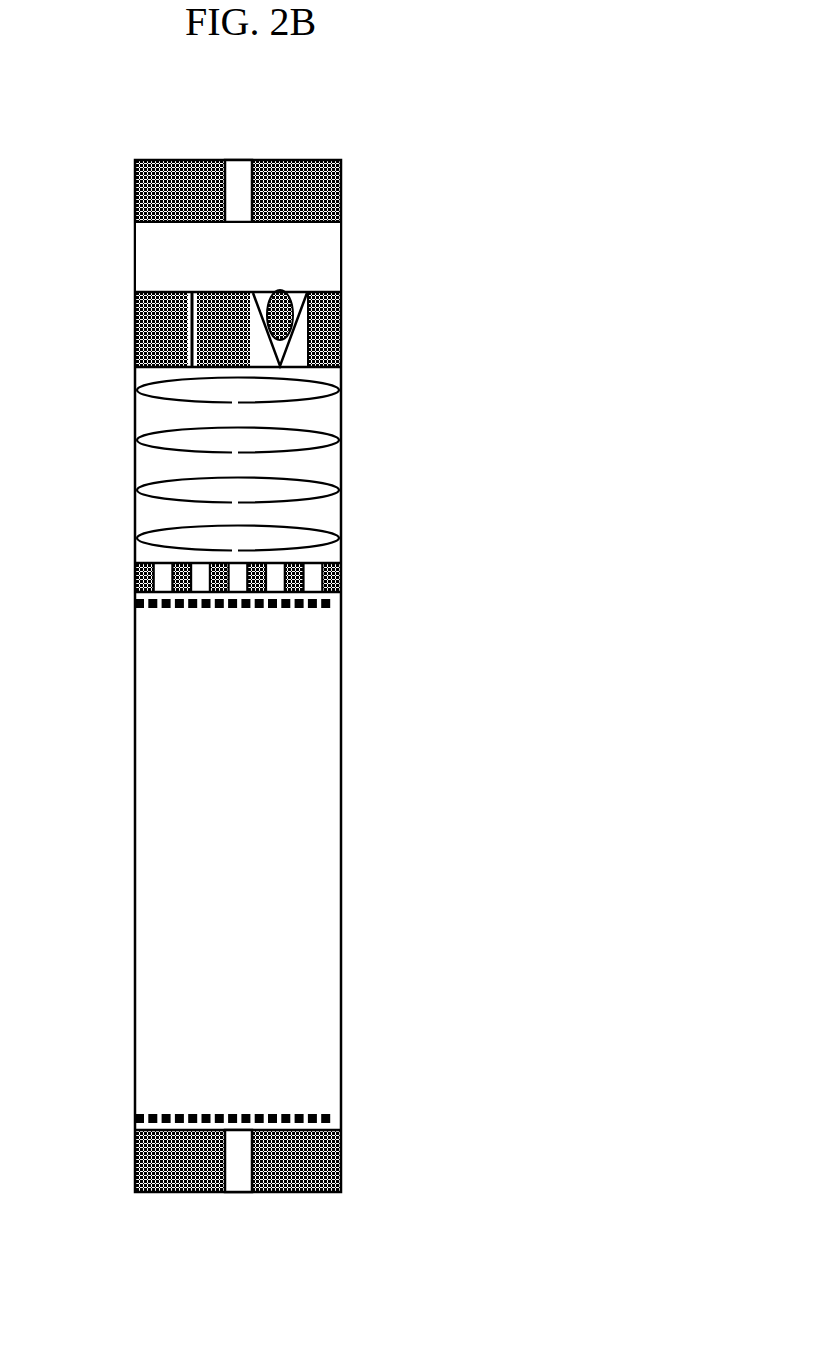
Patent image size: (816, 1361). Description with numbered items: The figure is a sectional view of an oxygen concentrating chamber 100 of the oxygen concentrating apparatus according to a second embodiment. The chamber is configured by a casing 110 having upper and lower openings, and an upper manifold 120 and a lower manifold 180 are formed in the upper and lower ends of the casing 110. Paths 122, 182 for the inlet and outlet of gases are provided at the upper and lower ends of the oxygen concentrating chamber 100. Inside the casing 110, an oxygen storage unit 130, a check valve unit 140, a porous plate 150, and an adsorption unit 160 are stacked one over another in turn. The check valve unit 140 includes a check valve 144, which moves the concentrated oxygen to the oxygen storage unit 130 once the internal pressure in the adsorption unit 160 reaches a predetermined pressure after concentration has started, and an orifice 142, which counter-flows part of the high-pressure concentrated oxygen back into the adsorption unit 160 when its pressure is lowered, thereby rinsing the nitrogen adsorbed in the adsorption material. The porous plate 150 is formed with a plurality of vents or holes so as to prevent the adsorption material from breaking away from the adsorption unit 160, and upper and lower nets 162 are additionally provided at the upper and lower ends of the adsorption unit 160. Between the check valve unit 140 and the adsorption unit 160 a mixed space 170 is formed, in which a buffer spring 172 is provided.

The oxygen concentrating chamber 100 is at (358, 144).
The casing 110 is at (342, 222).
The upper manifold 120 is at (238, 159).
The path 122 is at (248, 170).
The oxygen storage unit 130 is at (330, 268).
The check valve unit 140 is at (250, 317).
The orifice 142 is at (135, 313).
The check valve 144 is at (330, 317).
The porous plate 150 is at (343, 580).
The adsorption unit 160 is at (296, 861).
The upper and lower nets 162 is at (263, 603).
The mixed space 170 is at (247, 464).
The buffer spring 172 is at (153, 477).
The lower manifold 180 is at (295, 1194).
The path 182 is at (262, 1178).